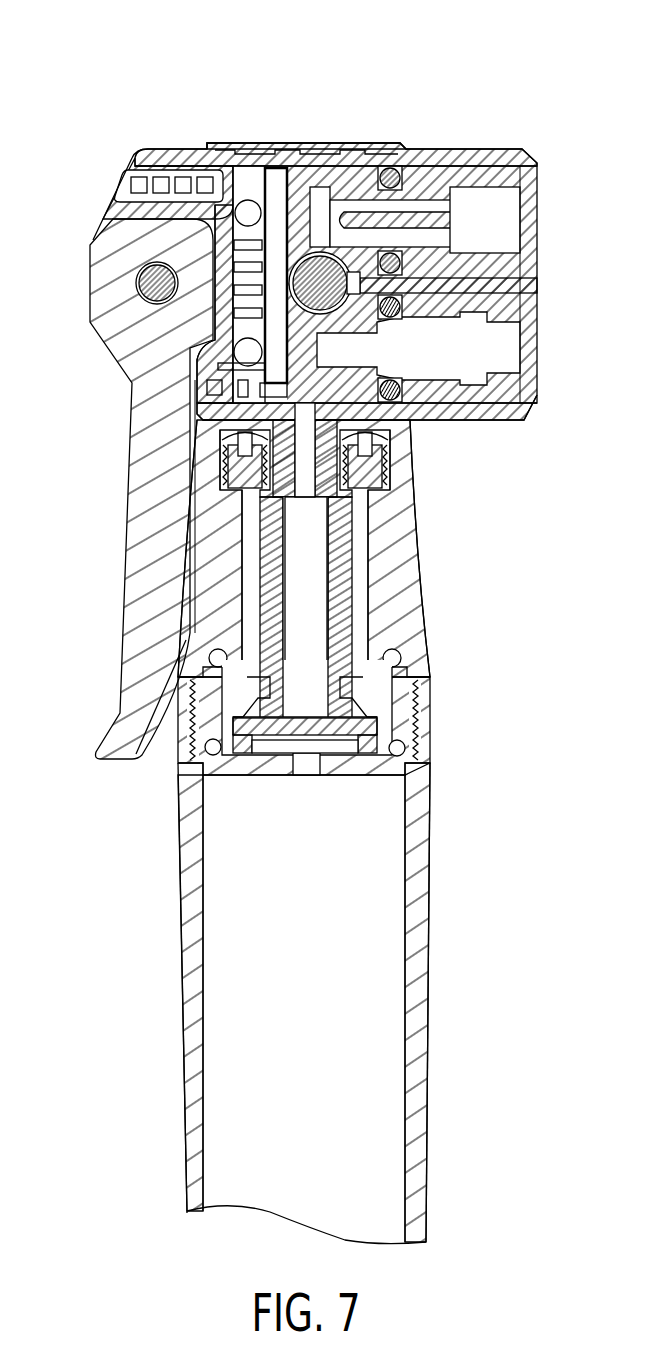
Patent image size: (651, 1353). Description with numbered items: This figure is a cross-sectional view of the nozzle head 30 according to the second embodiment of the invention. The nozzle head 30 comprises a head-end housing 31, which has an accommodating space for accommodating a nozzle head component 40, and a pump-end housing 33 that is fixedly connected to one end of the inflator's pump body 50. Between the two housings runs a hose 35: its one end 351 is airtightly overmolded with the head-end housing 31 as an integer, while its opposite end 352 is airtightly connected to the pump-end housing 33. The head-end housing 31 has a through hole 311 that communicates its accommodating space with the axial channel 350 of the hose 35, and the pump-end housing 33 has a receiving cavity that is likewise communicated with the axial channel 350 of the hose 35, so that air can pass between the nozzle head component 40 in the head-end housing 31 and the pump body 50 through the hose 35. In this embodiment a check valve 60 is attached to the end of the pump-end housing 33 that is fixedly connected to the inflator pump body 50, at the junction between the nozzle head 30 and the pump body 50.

The nozzle head 30 is at (205, 88).
The head-end housing 31 is at (470, 157).
The end of hose 351 is at (305, 142).
The pump-end housing 33 is at (405, 580).
The hose 35 is at (409, 560).
The through hole 311 is at (335, 430).
The axial channel 350 is at (315, 608).
The opposite end of hose 352 is at (357, 756).
The check valve 60 is at (305, 755).
The nozzle head component 40 is at (190, 322).
The pump body 50 is at (415, 975).